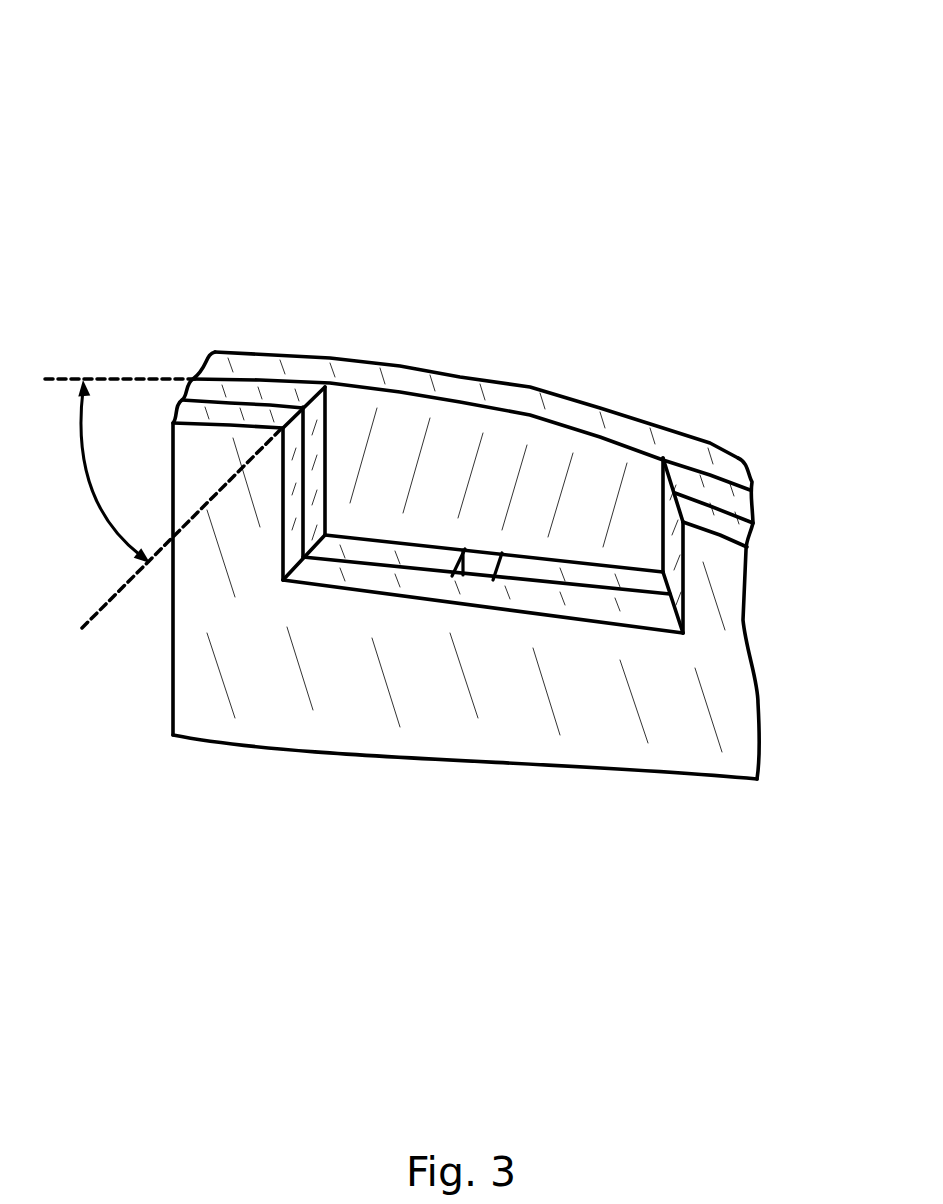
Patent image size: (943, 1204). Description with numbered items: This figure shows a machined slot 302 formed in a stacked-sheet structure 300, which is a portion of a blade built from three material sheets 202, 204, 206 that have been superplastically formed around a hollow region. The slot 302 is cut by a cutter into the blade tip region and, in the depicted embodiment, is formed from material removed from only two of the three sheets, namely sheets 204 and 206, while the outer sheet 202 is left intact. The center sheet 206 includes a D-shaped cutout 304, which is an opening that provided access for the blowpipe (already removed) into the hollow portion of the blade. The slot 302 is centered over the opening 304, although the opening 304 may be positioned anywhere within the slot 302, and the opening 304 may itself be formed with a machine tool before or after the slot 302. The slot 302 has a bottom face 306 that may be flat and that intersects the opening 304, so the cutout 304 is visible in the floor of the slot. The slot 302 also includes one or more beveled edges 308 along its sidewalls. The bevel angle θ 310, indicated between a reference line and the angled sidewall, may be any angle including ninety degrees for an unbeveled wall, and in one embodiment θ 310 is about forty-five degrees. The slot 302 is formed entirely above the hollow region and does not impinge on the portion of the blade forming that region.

The curved multilayer structure 300 is at (92, 60).
The material sheet 202 is at (455, 388).
The material sheet 204 is at (750, 520).
The center sheet 206 is at (745, 501).
The machined slot 302 is at (663, 460).
The D-shaped cutout 304 is at (477, 568).
The bottom face 306 is at (352, 578).
The beveled edge 308 is at (318, 425).
The bevel angle θ 310 is at (88, 460).